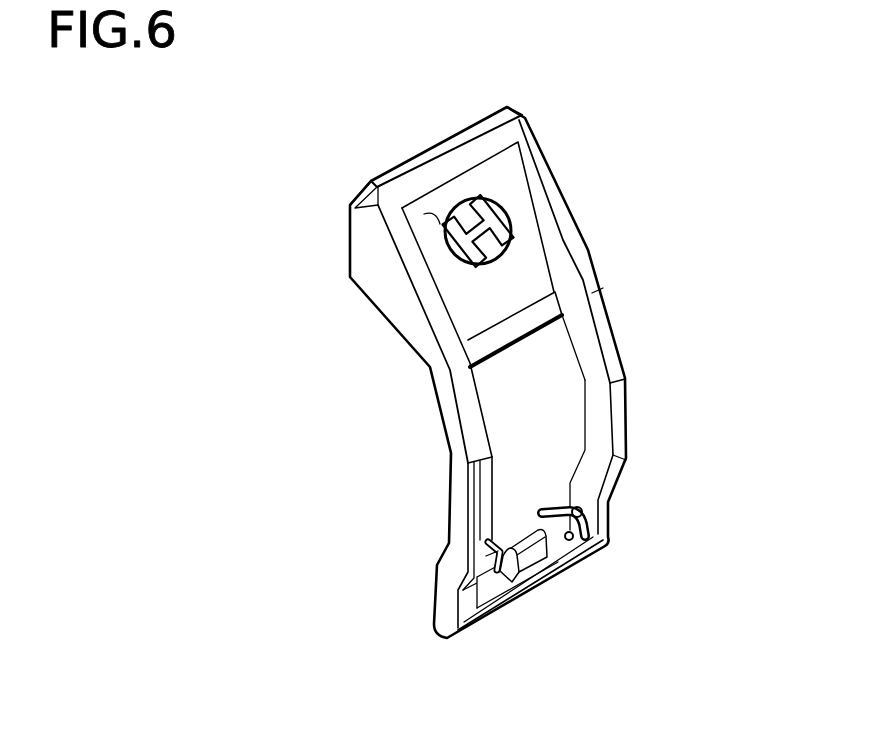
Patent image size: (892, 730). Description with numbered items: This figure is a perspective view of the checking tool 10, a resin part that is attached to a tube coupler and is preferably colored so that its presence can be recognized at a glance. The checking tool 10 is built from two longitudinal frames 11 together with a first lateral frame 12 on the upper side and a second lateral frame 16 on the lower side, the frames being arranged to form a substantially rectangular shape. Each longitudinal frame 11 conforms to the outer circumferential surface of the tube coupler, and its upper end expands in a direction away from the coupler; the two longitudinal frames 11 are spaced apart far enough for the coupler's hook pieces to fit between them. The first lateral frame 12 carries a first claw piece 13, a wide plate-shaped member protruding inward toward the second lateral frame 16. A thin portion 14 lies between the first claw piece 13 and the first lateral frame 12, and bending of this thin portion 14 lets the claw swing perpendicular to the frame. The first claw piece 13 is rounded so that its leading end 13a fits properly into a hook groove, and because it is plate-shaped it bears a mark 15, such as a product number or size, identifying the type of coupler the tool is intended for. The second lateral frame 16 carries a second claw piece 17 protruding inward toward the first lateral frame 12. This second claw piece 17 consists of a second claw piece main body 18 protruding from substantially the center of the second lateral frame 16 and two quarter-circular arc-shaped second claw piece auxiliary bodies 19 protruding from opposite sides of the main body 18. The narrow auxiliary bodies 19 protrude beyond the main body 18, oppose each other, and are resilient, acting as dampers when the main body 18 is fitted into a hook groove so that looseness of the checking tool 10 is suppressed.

The checking tool 10 is at (614, 186).
The longitudinal frame 11 is at (613, 368).
The first lateral frame 12 is at (451, 157).
The first claw piece 13 is at (505, 188).
The leading end 13a is at (537, 332).
The thin portion 14 is at (420, 227).
The mark 15 is at (475, 302).
The second lateral frame 16 is at (580, 556).
The second claw piece 17 is at (557, 504).
The second claw piece main body 18 is at (525, 575).
The second claw piece auxiliary body 19 is at (583, 517).